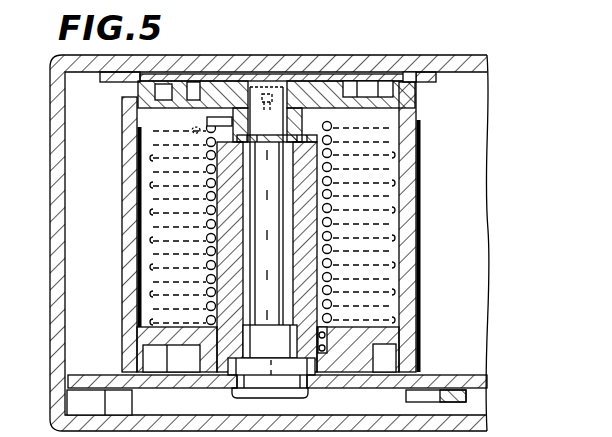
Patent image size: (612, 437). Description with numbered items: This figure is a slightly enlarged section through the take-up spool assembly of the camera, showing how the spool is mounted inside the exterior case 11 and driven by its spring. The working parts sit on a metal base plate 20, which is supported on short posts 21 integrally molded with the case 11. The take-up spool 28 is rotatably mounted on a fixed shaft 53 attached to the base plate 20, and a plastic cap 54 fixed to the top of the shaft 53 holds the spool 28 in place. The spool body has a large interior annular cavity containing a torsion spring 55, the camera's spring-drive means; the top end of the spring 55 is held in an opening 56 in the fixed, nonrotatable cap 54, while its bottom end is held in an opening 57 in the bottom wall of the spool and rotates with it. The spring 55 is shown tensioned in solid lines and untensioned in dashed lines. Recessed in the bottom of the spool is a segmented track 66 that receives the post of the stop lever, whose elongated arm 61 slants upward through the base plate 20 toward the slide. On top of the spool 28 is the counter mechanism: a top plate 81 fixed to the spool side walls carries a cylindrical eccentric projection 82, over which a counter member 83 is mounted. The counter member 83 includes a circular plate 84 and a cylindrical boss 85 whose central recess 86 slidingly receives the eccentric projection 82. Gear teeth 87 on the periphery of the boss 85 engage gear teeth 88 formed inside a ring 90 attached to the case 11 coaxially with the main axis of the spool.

The case 11 is at (58, 212).
The base plate 20 is at (448, 374).
The posts 21 is at (122, 399).
The take-up spool 28 is at (413, 193).
The shaft 53 is at (283, 311).
The cap 54 is at (283, 120).
The torsion spring 55 is at (310, 243).
The opening 56 is at (206, 122).
The opening 57 is at (340, 340).
The arm 61 is at (469, 397).
The track 66 is at (143, 350).
The top plate 81 is at (181, 225).
The eccentric projection 82 is at (215, 92).
The counter member 83 is at (263, 75).
The circular plate 84 is at (240, 77).
The cylindrical boss 85 is at (331, 107).
The central recess 86 is at (188, 88).
The gear teeth 87 is at (349, 88).
The gear teeth 88 is at (386, 90).
The ring 90 is at (434, 78).